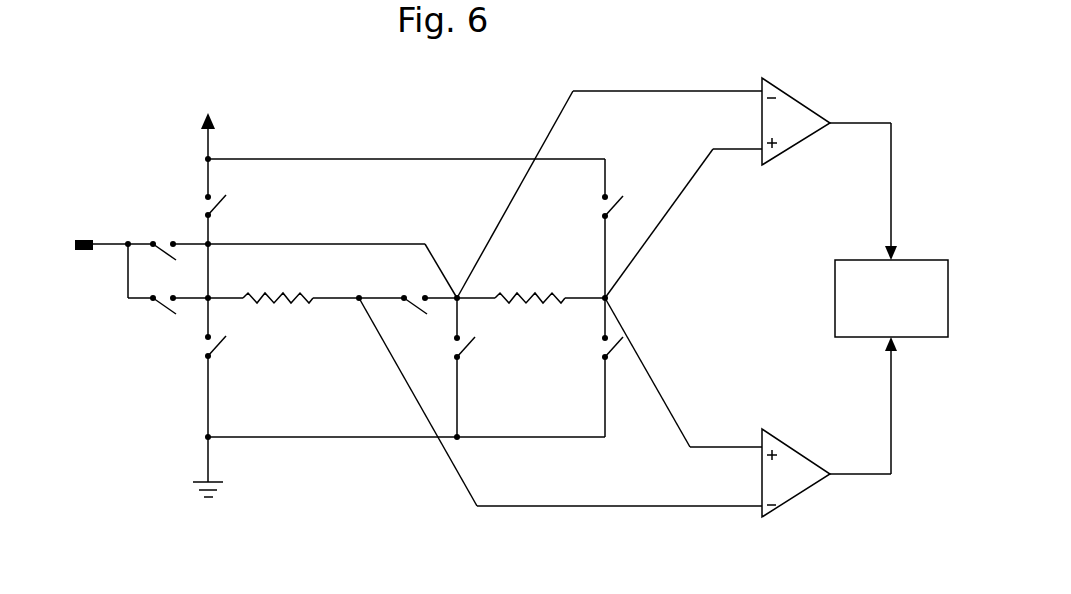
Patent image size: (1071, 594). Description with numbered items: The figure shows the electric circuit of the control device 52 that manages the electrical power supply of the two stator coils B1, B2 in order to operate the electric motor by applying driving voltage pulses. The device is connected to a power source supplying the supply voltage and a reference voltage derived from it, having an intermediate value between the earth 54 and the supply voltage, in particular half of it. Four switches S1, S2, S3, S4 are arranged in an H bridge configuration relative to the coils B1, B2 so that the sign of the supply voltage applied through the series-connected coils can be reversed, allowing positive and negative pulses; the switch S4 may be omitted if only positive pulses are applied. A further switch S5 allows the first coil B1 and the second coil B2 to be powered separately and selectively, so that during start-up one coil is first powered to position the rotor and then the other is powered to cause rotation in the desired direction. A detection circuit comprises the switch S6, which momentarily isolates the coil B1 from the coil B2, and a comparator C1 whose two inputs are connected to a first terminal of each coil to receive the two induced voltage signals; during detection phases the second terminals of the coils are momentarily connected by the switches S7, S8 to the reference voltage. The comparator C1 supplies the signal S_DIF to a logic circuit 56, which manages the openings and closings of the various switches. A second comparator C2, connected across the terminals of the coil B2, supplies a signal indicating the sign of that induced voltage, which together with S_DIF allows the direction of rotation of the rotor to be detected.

The control device 52 is at (397, 327).
The earth 54 is at (172, 486).
The logic circuit 56 is at (843, 288).
The switch S1 is at (230, 206).
The switch S2 is at (598, 206).
The switch S3 is at (230, 347).
The switch S4 is at (597, 348).
The switch S5 is at (449, 348).
The switch S6 is at (412, 293).
The switch S7 is at (161, 238).
The switch S8 is at (161, 318).
The coil B1 is at (278, 285).
The coil B2 is at (530, 285).
The comparator C1 is at (829, 427).
The comparator C2 is at (829, 169).